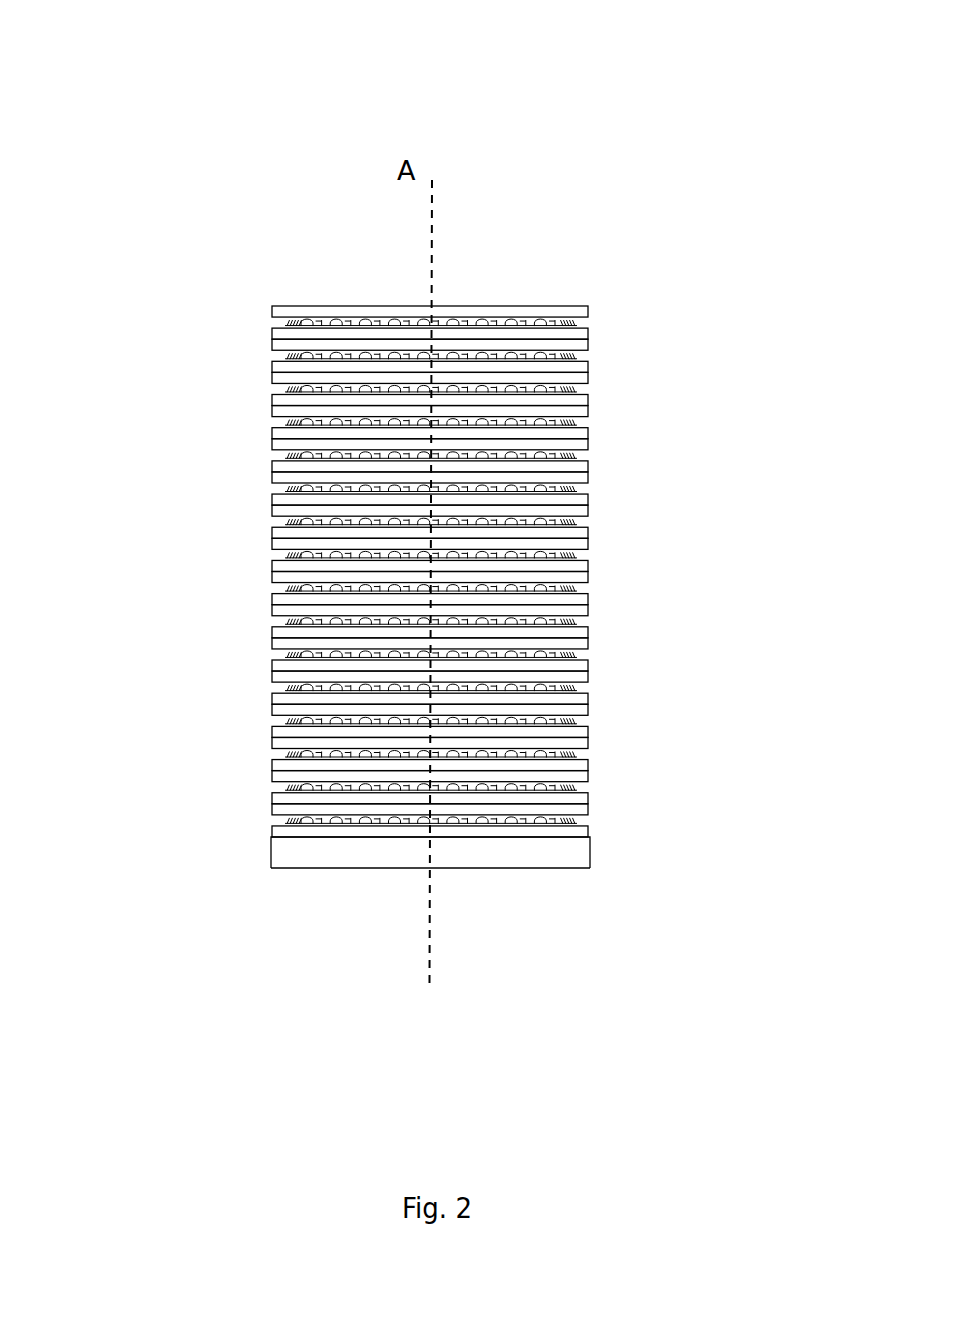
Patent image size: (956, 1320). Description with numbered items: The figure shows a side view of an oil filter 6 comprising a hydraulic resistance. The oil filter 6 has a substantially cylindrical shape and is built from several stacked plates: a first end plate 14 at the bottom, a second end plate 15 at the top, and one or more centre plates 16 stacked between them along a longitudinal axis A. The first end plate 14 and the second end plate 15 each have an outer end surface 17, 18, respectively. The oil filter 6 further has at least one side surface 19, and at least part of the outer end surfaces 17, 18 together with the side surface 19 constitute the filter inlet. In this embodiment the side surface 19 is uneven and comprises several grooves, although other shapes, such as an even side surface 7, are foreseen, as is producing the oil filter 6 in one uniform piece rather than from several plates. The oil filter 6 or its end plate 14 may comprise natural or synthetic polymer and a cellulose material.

The oil filter 6 is at (243, 98).
The even side surface 7 is at (589, 542).
The first end plate 14 is at (578, 858).
The second end plate 15 is at (590, 313).
The centre plate 16 is at (272, 362).
The outer end surface 17 is at (495, 868).
The outer end surface 18 is at (530, 305).
The side surface 19 is at (589, 643).